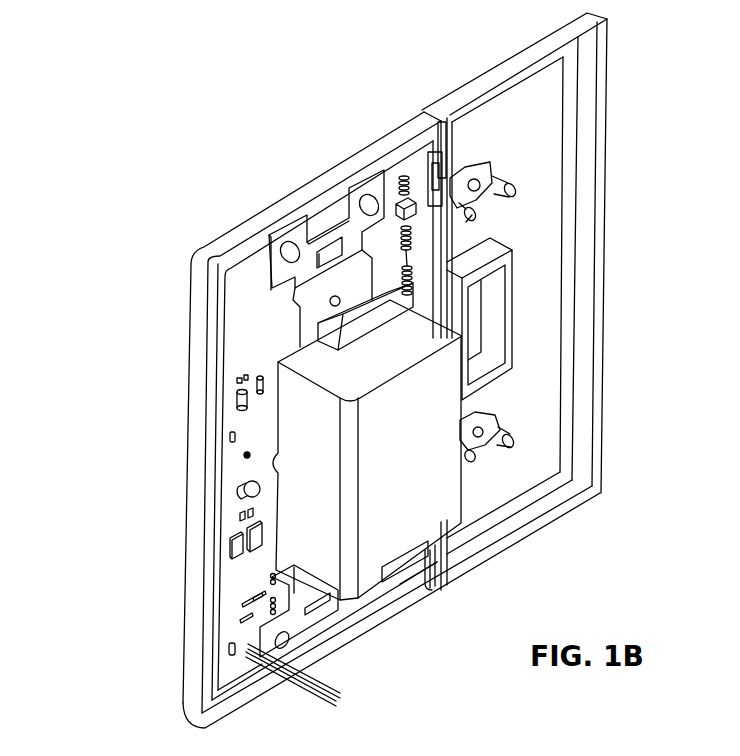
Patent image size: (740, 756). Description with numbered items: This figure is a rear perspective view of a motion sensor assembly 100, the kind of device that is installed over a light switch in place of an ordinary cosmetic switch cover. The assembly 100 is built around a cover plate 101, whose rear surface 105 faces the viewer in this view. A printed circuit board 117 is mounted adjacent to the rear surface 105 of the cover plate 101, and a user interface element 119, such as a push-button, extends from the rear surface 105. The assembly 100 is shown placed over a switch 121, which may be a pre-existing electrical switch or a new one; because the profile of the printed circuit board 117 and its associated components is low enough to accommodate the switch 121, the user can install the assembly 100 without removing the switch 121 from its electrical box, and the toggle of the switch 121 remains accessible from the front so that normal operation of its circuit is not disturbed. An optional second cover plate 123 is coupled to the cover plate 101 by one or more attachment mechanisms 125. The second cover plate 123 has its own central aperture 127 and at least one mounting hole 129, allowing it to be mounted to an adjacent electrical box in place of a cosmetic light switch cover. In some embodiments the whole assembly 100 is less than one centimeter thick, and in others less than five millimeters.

The motion sensor assembly 100 is at (130, 101).
The cover plate 101 is at (213, 230).
The rear surface 105 is at (322, 198).
The printed circuit board 117 is at (237, 320).
The user interface element 119 is at (237, 490).
The switch 121 is at (390, 437).
The second cover plate 123 is at (513, 55).
The attachment mechanisms 125 is at (438, 106).
The central aperture 127 is at (490, 315).
The mounting hole 129 is at (510, 183).